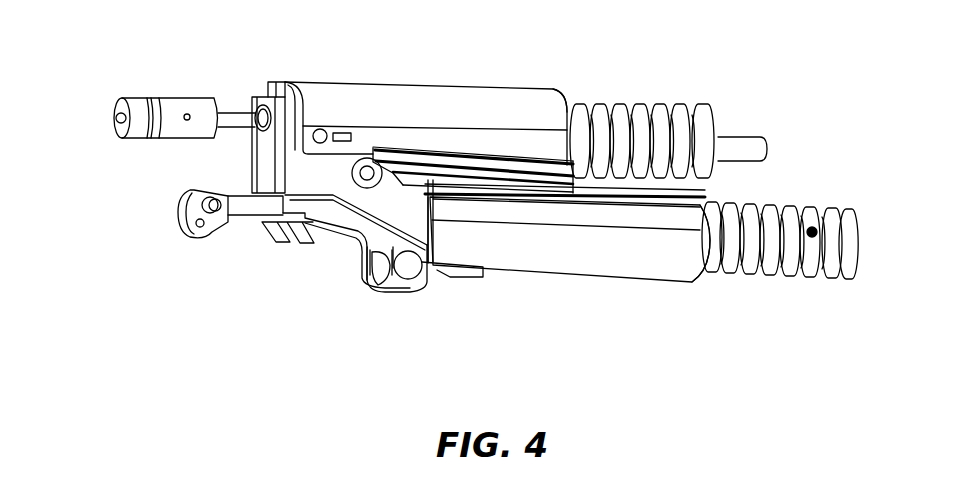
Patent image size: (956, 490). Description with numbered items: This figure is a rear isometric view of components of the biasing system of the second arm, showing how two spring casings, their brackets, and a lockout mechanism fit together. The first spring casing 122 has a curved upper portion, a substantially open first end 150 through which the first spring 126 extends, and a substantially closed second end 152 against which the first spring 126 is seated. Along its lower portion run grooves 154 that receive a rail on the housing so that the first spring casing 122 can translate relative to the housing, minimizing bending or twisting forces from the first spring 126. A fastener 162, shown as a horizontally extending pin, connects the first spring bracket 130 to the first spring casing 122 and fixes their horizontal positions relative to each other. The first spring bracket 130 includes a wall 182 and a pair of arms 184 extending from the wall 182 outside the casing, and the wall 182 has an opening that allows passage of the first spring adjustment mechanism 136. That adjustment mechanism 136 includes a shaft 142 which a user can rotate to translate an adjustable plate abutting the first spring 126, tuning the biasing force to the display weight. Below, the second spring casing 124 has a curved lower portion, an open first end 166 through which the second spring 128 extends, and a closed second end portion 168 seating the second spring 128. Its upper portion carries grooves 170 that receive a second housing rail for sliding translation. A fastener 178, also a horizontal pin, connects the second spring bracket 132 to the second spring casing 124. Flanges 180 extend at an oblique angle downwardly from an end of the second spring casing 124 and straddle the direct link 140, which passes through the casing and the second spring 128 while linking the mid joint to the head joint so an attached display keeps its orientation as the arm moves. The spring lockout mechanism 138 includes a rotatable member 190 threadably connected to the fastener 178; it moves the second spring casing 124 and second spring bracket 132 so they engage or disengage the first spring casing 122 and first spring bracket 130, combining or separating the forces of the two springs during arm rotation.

The first spring casing 122 is at (478, 89).
The second spring casing 124 is at (631, 282).
The first spring 126 is at (698, 115).
The second spring 128 is at (835, 280).
The first spring bracket 130 is at (247, 163).
The second spring bracket 132 is at (418, 288).
The first spring adjustment mechanism 136 is at (107, 117).
The spring lockout mechanism 138 is at (364, 260).
The direct link 140 is at (242, 218).
The shaft 142 is at (758, 137).
The first end 150 is at (567, 110).
The second end 152 is at (288, 84).
The grooves 154 is at (432, 158).
The fastener 162 is at (368, 156).
The first end 166 is at (690, 280).
The second end portion 168 is at (435, 205).
The grooves 170 is at (707, 195).
The fastener 178 is at (390, 290).
The flanges 180 is at (273, 245).
The wall 182 is at (254, 101).
The arms 184 is at (437, 228).
The rotatable member 190 is at (468, 279).